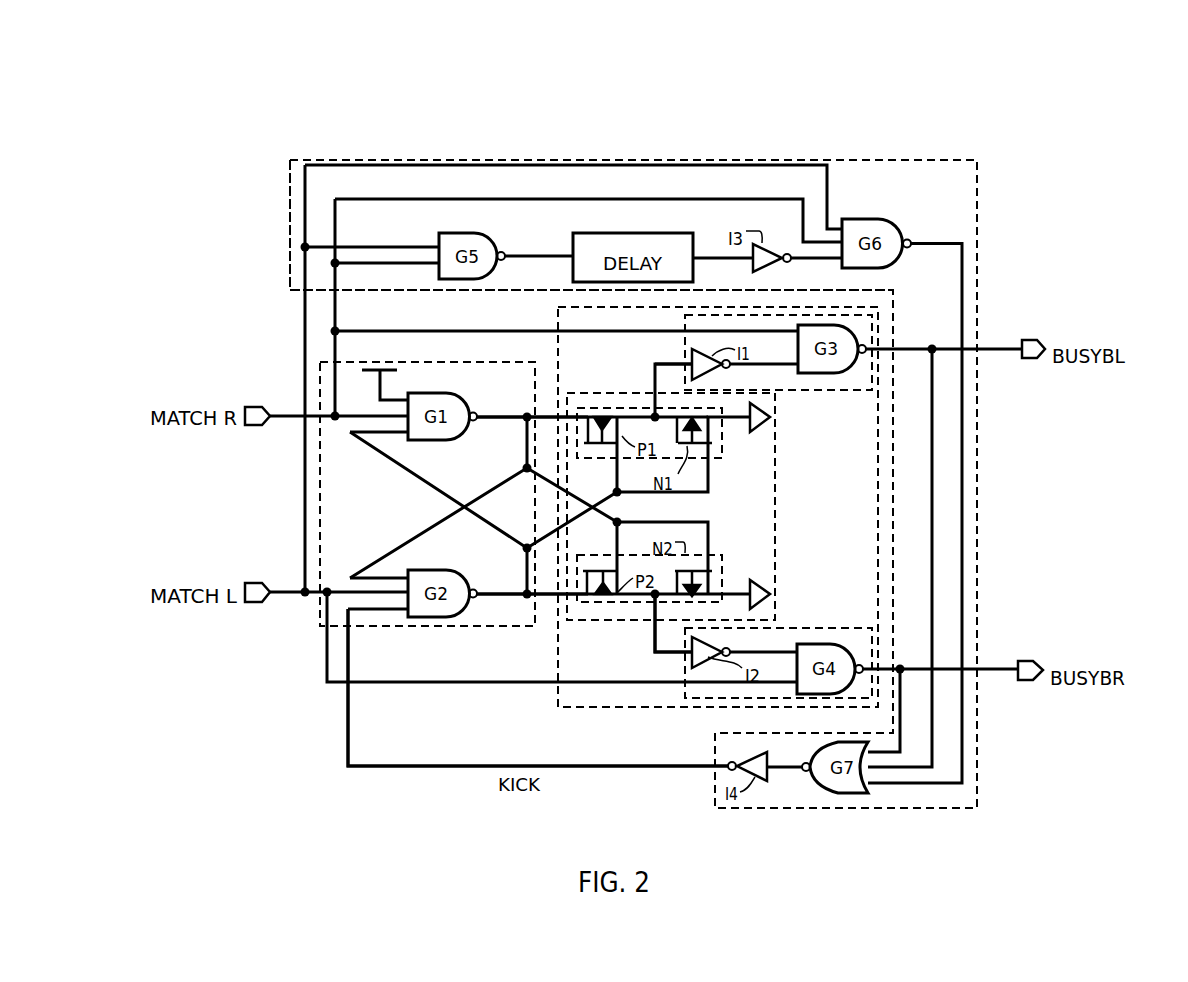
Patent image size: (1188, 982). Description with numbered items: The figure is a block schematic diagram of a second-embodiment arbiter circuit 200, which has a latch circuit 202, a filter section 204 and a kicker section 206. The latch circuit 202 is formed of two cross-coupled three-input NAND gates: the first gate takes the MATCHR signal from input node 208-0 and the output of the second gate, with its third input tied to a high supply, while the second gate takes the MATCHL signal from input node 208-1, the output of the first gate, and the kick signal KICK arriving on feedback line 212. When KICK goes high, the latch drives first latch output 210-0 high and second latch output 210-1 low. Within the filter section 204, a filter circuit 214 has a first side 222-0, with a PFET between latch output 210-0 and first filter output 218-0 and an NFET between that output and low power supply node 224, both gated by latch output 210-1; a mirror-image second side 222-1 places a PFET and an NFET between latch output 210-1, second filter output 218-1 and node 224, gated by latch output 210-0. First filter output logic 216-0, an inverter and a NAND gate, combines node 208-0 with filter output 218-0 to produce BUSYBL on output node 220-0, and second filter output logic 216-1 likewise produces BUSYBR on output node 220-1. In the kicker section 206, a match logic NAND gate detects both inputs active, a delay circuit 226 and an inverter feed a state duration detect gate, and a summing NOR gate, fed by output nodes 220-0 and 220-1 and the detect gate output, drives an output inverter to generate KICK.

The arbiter circuit 200 is at (1075, 130).
The latch circuit 202 is at (320, 378).
The filter section 204 is at (557, 345).
The kicker section 206 is at (290, 168).
The input node 208-0 is at (250, 427).
The input node 208-1 is at (252, 582).
The first latch output 210-0 is at (548, 415).
The second latch output 210-1 is at (554, 600).
The feedback line 212 is at (348, 648).
The filter circuit 214 is at (778, 478).
The first filter output logic 216-0 is at (826, 392).
The second filter output logic 216-1 is at (828, 628).
The first filter output 218-0 is at (655, 380).
The second filter output 218-1 is at (653, 643).
The output node 220-0 is at (1028, 360).
The output node 220-1 is at (1023, 661).
The first side 222-0 is at (722, 453).
The second side 222-1 is at (722, 556).
The low power supply node 224 is at (758, 432).
The delay circuit 226 is at (656, 242).